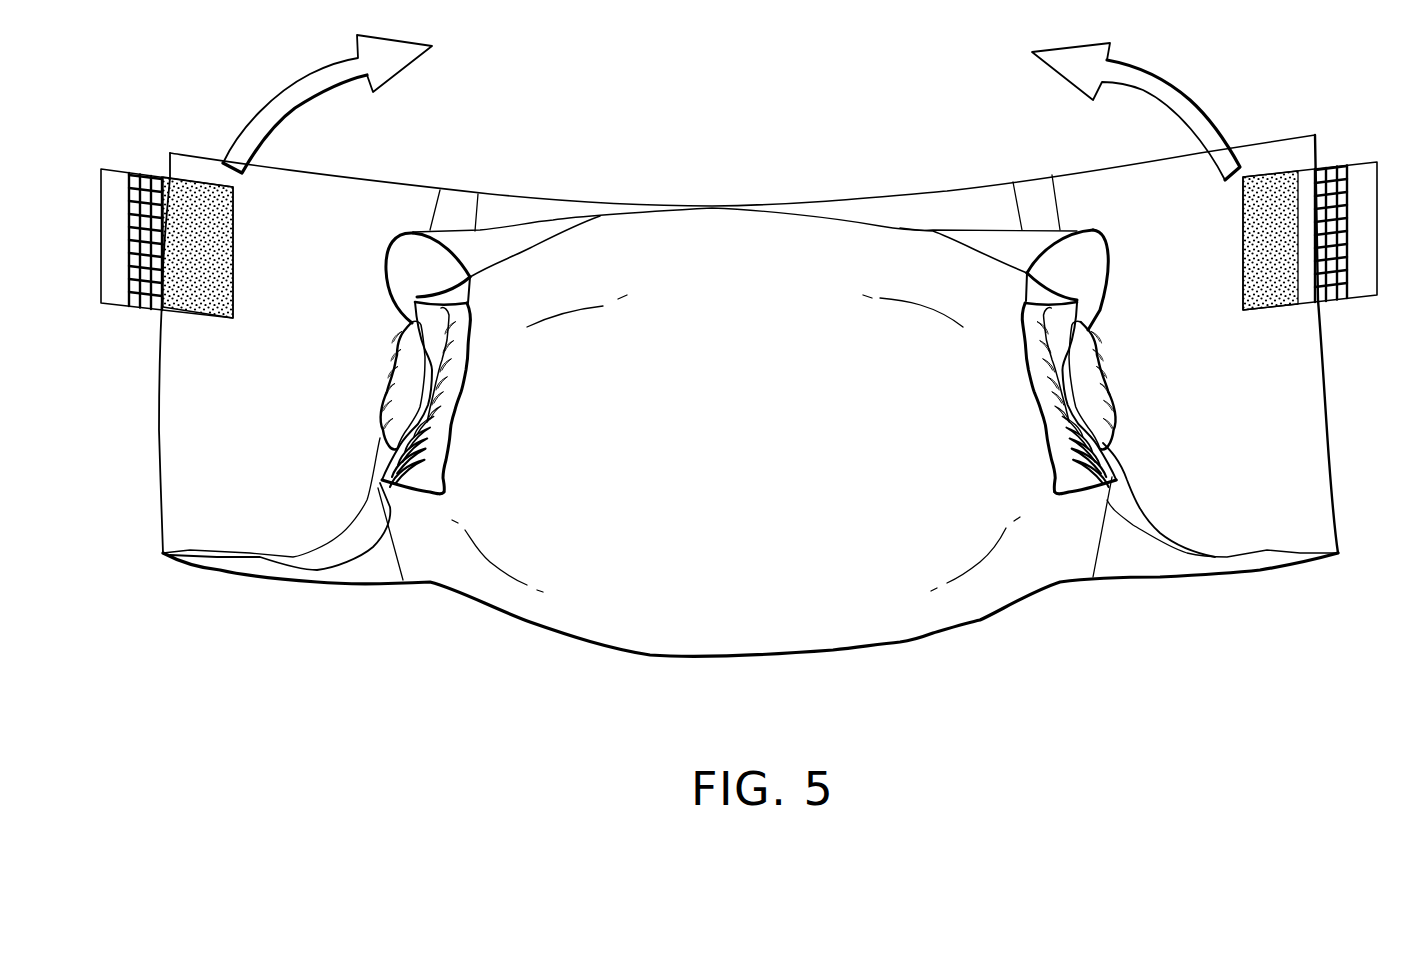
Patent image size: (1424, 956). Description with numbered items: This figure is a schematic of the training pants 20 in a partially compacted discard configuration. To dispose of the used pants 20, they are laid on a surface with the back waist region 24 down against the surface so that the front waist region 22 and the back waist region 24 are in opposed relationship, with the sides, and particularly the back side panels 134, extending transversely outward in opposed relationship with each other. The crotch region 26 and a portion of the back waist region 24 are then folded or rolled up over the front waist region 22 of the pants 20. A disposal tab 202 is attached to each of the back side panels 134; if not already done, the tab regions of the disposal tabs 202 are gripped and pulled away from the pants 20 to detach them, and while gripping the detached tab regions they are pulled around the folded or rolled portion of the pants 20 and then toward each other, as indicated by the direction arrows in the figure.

The training pants 20 is at (708, 82).
The front waist region 22 is at (748, 202).
The back waist region 24 is at (733, 658).
The crotch region 26 is at (705, 507).
The back side panels 134 is at (367, 180).
The disposal tab 202 is at (132, 288).